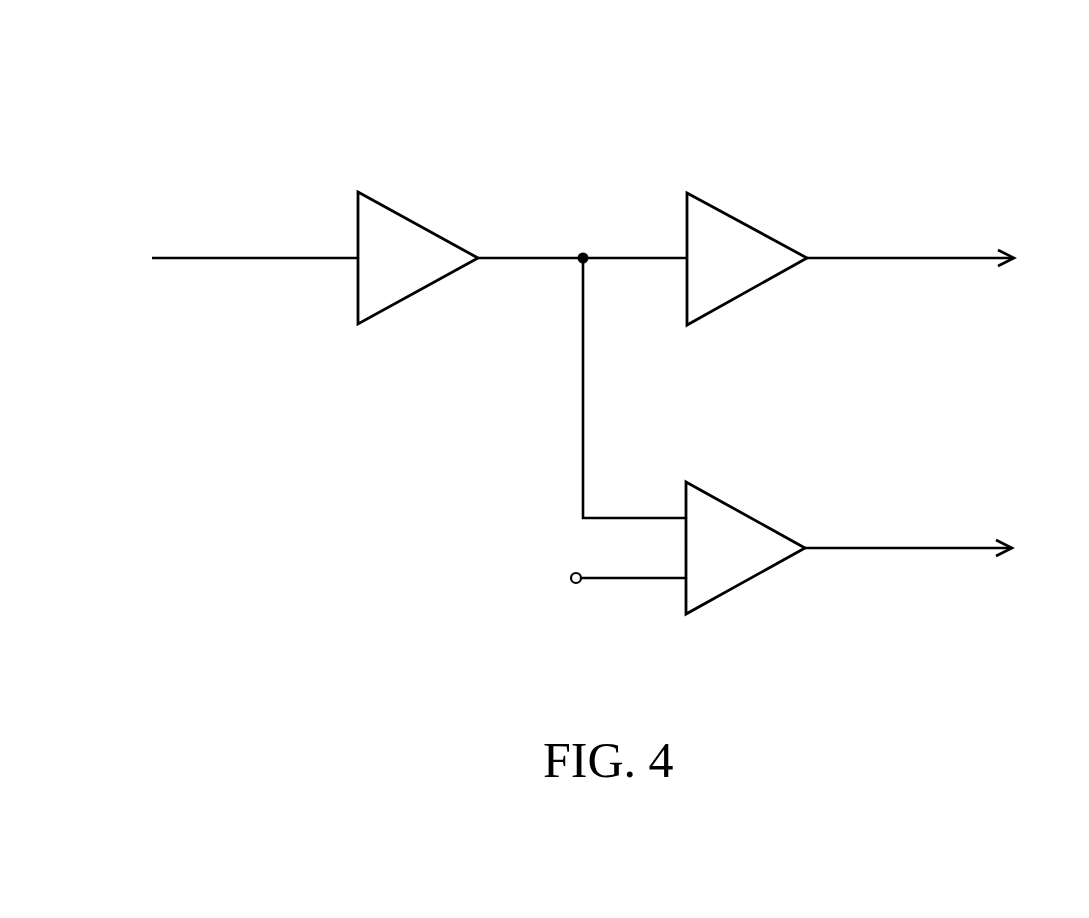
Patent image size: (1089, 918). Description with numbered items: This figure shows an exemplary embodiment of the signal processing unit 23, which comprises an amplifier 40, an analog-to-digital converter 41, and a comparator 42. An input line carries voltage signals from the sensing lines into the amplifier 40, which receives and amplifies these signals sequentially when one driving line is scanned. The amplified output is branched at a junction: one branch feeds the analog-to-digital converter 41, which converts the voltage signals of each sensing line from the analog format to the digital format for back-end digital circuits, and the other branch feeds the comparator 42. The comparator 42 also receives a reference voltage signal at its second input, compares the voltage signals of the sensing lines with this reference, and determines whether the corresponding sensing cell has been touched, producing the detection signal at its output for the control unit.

The signal processing unit 23 is at (143, 111).
The amplifier 40 is at (417, 224).
The analog-to-digital converter 41 is at (745, 224).
The comparator 42 is at (744, 514).